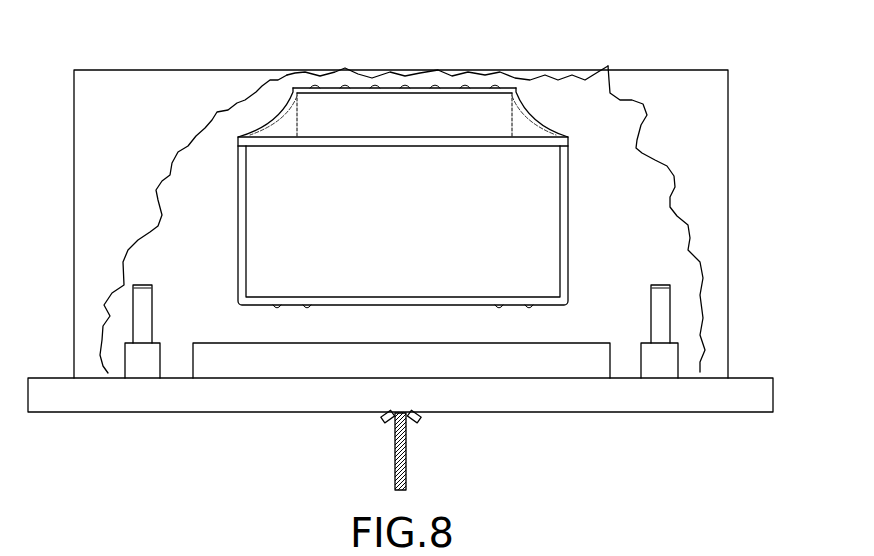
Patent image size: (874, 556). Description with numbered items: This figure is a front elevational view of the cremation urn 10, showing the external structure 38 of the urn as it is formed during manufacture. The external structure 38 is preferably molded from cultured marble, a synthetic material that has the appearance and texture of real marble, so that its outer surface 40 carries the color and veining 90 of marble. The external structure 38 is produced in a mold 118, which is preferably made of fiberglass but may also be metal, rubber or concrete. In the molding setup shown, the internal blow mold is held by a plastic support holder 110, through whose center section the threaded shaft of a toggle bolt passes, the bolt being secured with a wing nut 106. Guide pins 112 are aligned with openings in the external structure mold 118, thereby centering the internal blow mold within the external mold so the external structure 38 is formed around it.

The cremation urn 10 is at (376, 196).
The external structure 38 is at (474, 168).
The outer surface 40 is at (474, 168).
The marble color and veining 90 is at (390, 172).
The wing nut 106 is at (410, 418).
The plastic support holder 110 is at (223, 357).
The guide pins 112 is at (660, 313).
The mold 118 is at (683, 118).